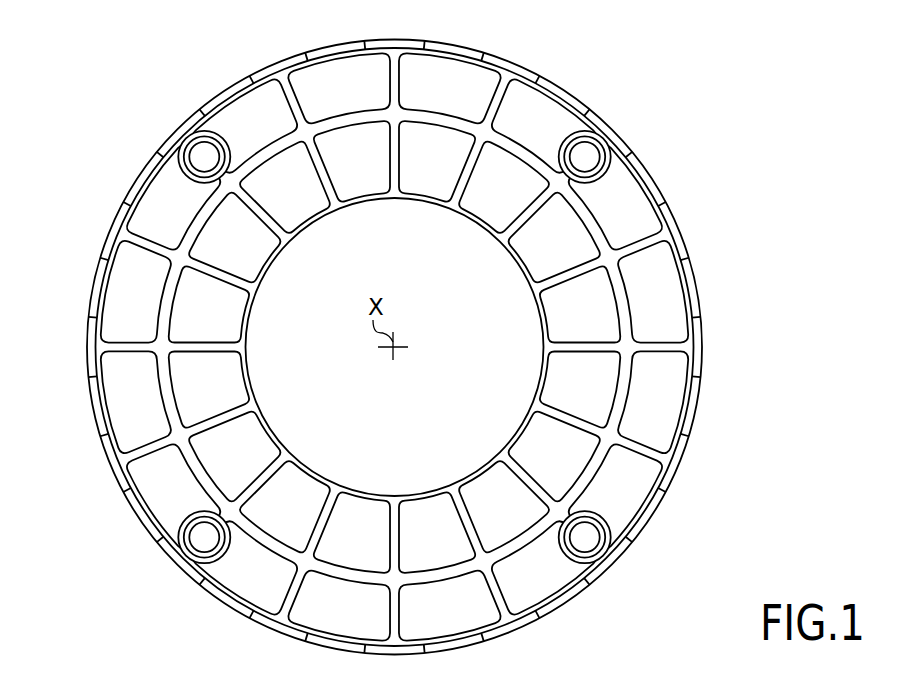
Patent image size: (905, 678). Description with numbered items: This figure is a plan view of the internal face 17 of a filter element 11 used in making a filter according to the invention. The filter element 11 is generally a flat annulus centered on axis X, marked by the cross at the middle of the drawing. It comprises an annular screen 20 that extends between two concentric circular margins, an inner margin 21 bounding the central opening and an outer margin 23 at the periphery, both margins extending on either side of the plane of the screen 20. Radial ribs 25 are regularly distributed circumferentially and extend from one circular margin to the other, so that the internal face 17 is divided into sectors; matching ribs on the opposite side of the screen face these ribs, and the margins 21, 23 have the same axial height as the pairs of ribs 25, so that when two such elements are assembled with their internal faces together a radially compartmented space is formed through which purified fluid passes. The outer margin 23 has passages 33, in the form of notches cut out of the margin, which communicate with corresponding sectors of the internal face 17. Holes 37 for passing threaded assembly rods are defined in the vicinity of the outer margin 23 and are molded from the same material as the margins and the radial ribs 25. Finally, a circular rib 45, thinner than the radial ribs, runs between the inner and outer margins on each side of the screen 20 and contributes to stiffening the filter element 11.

The filter element 11 is at (659, 169).
The internal face 17 is at (533, 587).
The annular screen 20 is at (655, 402).
The inner margin 21 is at (517, 260).
The outer margin 23 is at (487, 60).
The radial ribs 25 is at (155, 443).
The passages 33 is at (338, 45).
The holes 37 is at (203, 151).
The circular rib 45 is at (430, 573).